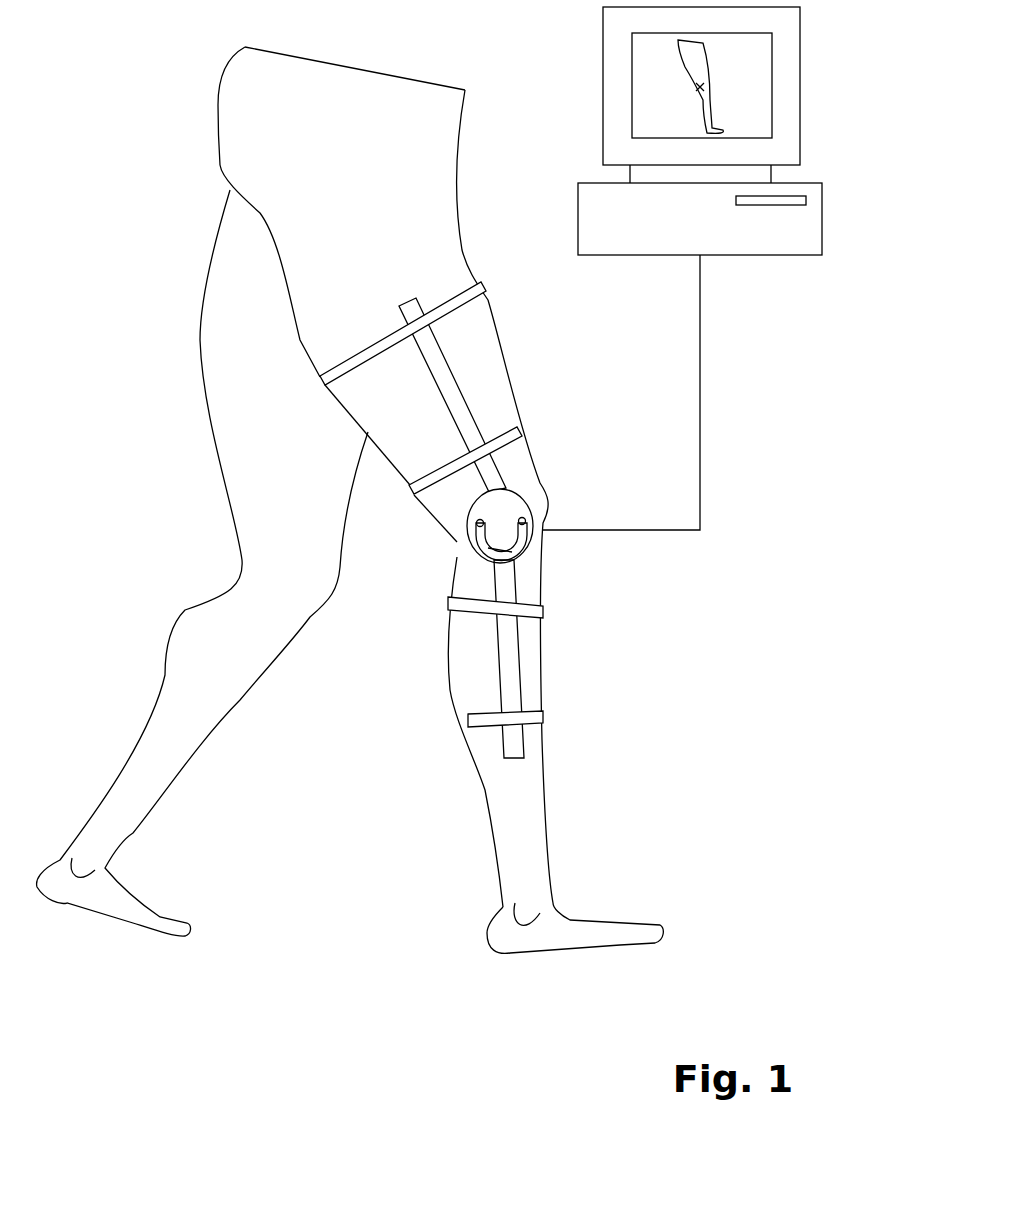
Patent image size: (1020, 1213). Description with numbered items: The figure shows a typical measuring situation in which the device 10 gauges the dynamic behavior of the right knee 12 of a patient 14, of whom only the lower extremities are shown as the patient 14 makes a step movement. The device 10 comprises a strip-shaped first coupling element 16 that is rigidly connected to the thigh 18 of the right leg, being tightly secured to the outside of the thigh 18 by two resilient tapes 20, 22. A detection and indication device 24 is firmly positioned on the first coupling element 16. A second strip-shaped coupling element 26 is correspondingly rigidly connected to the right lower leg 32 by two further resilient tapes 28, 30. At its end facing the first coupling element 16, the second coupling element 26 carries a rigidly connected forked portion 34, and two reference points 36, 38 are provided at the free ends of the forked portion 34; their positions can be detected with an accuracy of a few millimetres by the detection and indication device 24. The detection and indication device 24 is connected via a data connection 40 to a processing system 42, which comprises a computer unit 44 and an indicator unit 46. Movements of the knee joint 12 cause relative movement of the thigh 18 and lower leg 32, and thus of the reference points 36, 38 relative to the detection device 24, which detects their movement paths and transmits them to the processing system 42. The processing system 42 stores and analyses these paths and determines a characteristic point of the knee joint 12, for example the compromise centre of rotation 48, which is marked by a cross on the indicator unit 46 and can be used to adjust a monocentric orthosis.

The device 10 is at (733, 647).
The right knee 12 is at (545, 500).
The patient 14 is at (217, 152).
The first coupling element 16 is at (453, 390).
The thigh 18 is at (413, 217).
The resilient tape 20 is at (518, 428).
The resilient tape 22 is at (465, 300).
The detection and indication device 24 is at (477, 552).
The second coupling element 26 is at (512, 663).
The resilient tape 28 is at (545, 609).
The resilient tape 30 is at (545, 718).
The right lower leg 32 is at (498, 800).
The forked portion 34 is at (530, 558).
The reference point 36 is at (478, 523).
The reference point 38 is at (527, 520).
The data connection 40 is at (700, 428).
The processing system 42 is at (676, 164).
The computer unit 44 is at (755, 238).
The indicator unit 46 is at (676, 86).
The compromise centre of rotation 48 is at (700, 87).